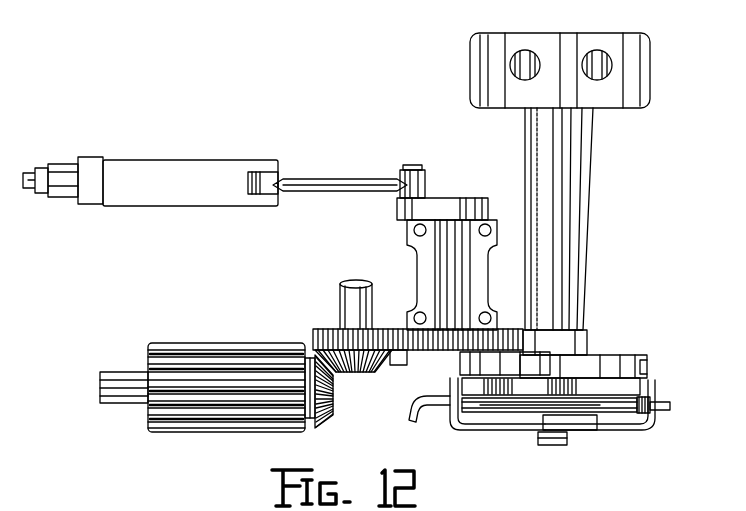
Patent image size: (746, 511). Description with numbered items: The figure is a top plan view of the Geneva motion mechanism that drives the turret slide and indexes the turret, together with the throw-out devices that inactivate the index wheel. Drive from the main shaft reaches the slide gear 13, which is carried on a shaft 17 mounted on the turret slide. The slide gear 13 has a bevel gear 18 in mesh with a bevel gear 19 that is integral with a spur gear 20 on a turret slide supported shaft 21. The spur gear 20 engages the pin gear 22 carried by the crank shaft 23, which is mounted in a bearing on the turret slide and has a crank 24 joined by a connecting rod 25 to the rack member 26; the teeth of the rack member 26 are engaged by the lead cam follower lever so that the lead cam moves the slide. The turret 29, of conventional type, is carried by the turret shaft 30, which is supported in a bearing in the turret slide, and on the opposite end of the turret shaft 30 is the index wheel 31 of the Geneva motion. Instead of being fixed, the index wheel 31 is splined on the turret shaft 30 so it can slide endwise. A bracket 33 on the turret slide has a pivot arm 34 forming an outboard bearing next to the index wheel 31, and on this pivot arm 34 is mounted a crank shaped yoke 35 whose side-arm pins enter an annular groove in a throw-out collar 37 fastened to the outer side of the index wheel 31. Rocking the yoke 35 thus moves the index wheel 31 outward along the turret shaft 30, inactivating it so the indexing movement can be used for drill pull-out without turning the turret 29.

The slide gear 13 is at (210, 432).
The shaft 17 is at (125, 403).
The bevel gear 18 is at (333, 396).
The bevel gear 19 is at (370, 372).
The spur gear 20 is at (332, 328).
The turret slide supported shaft 21 is at (340, 290).
The pin gear 22 is at (437, 352).
The crank shaft 23 is at (450, 280).
The crank 24 is at (432, 205).
The connecting rod 25 is at (305, 178).
The rack member 26 is at (165, 178).
The turret 29 is at (470, 84).
The turret shaft 30 is at (578, 236).
The index wheel 31 is at (612, 357).
The bracket 33 is at (438, 410).
The pivot arm 34 is at (600, 411).
The crank shaped yoke 35 is at (650, 428).
The throw-out collar 37 is at (503, 393).